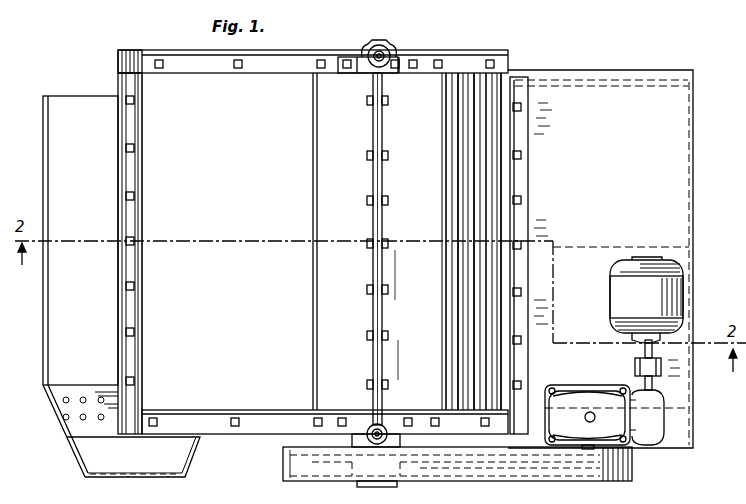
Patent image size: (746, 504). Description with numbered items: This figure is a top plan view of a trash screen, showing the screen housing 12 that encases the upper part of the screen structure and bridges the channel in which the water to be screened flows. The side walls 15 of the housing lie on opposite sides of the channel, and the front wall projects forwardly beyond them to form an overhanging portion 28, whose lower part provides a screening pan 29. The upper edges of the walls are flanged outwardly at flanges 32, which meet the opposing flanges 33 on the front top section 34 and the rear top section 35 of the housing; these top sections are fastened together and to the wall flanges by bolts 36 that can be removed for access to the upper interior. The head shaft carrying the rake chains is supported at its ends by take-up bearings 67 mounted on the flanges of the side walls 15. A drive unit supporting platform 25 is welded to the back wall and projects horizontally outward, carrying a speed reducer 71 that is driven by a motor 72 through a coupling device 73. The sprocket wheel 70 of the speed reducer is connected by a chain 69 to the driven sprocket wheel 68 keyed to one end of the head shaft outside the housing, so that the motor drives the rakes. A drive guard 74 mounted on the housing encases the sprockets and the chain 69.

The screen housing 12 is at (472, 50).
The side walls 15 is at (80, 96).
The drive unit supporting platform 25 is at (696, 177).
The overhanging portion 28 is at (58, 302).
The screening pan 29 is at (90, 445).
The flanges 32 is at (132, 52).
The opposing flanges 33 is at (146, 108).
The front top section 34 is at (246, 217).
The rear top section 35 is at (358, 327).
The bolts 36 is at (238, 76).
The take-up bearings 67 is at (396, 52).
The driven sprocket wheel 68 is at (344, 478).
The chain 69 is at (410, 478).
The sprocket wheel 70 is at (600, 483).
The speed reducer 71 is at (581, 390).
The motor 72 is at (618, 286).
The coupling device 73 is at (634, 366).
The drive guard 74 is at (634, 470).